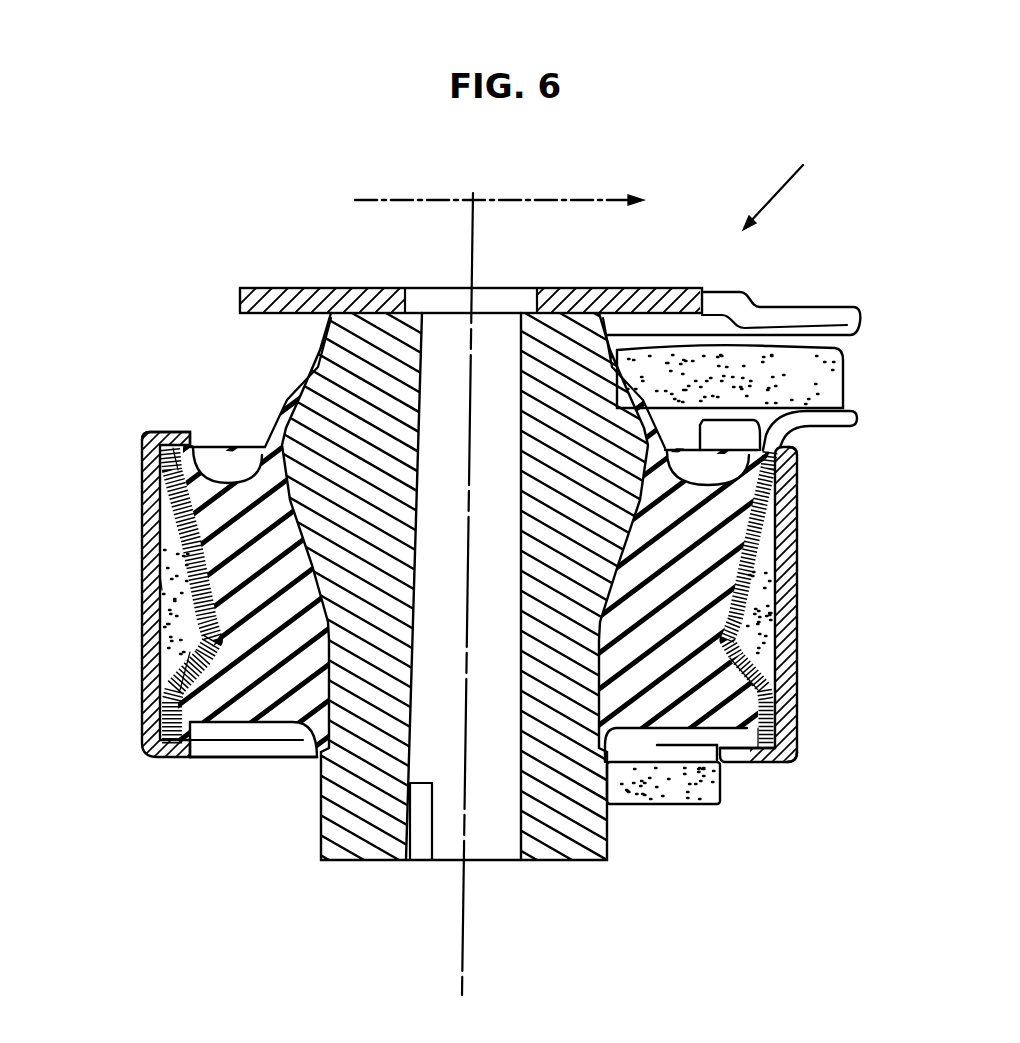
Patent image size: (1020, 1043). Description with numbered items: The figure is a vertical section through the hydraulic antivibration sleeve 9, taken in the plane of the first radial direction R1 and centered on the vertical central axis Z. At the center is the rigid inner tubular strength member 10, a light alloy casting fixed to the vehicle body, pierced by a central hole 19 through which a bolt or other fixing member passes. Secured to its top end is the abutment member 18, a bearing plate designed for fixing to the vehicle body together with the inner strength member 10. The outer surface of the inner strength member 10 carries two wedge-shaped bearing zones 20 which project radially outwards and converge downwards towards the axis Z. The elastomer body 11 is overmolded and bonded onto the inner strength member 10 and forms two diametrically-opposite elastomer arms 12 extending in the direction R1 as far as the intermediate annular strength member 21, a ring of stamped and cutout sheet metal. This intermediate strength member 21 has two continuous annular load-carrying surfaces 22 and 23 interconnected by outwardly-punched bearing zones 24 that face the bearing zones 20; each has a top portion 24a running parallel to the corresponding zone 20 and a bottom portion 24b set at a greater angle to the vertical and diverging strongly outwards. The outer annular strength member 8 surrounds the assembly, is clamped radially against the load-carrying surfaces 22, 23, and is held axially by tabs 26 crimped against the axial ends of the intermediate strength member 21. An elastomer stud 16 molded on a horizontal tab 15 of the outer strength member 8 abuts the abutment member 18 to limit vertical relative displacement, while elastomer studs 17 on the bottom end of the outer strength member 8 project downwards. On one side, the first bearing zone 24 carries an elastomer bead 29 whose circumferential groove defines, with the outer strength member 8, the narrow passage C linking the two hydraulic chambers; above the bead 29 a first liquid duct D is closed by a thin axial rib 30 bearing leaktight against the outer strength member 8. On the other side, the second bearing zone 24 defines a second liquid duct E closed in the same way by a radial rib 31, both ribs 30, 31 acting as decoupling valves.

The outer annular strength member 8 is at (797, 605).
The vibration damping mount assembly 9 is at (781, 182).
The inner tubular strength member 10 is at (565, 845).
The elastomer body 11 is at (275, 463).
The elastomer arms 12 is at (255, 710).
The horizontal tab 15 is at (842, 418).
The elastomer stud 16 is at (785, 370).
The elastomer studs 17 is at (686, 790).
The abutment member 18 is at (664, 290).
The central hole 19 is at (490, 838).
The wedge-shaped bearing zones 20 is at (300, 420).
The intermediate annular strength member 21 is at (142, 507).
The annular load-carrying surface 22 is at (142, 448).
The annular load-carrying surface 23 is at (795, 740).
The bearing zones 24 is at (165, 607).
The top portion 24a is at (160, 548).
The bottom portion 24b is at (160, 668).
The tabs 26 is at (155, 438).
The elastomer bead 29 is at (793, 654).
The axial rib 30 is at (793, 580).
The radial rib 31 is at (160, 582).
The narrow passage C is at (790, 715).
The first liquid duct D is at (800, 557).
The second liquid duct E is at (165, 638).
The first radial direction R1 is at (586, 199).
The vertical central axis Z is at (462, 961).